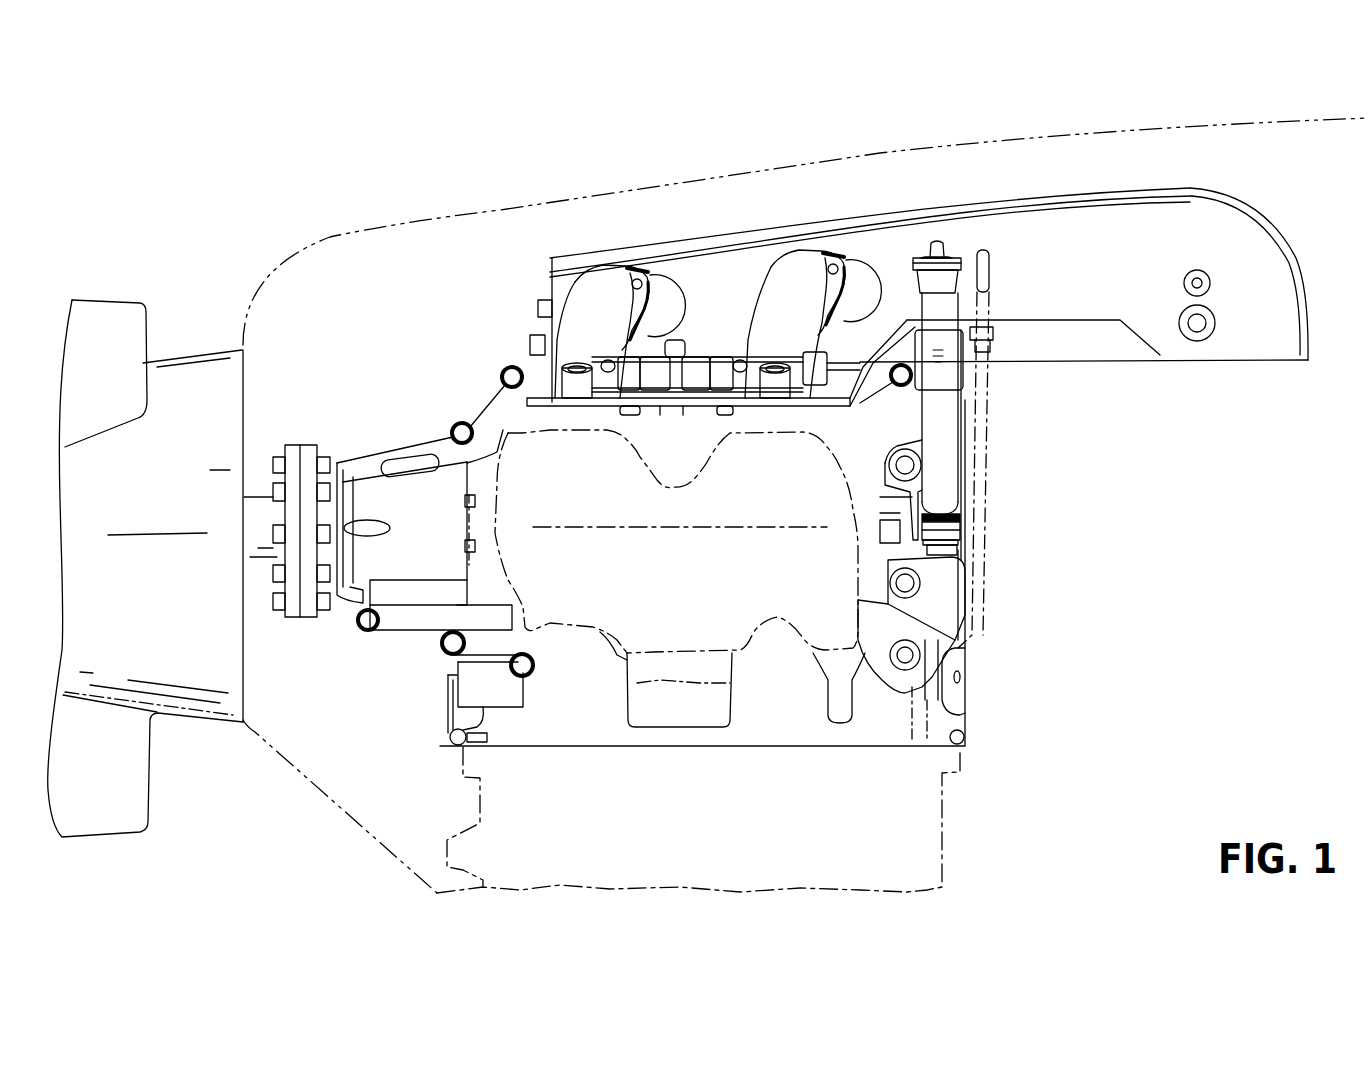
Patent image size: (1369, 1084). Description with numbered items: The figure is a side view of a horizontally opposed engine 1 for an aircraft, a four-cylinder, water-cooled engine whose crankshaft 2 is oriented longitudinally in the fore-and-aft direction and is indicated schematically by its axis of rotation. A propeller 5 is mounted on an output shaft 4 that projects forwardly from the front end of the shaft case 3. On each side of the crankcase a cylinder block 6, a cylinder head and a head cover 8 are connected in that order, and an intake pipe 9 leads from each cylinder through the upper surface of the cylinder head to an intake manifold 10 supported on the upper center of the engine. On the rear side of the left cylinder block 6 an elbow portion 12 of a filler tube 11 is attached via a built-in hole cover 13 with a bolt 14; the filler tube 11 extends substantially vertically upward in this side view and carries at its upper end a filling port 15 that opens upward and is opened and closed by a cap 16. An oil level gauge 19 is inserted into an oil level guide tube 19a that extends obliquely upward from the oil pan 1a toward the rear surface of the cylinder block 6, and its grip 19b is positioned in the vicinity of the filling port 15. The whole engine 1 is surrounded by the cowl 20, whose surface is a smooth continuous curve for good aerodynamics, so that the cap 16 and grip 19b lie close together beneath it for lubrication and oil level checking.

The horizontally opposed engine 1 is at (988, 670).
The oil pan 1a is at (910, 832).
The crankshaft 2 is at (763, 530).
The shaft case 3 is at (473, 405).
The output shaft 4 is at (330, 550).
The propeller 5 is at (127, 307).
The cylinder block 6 is at (517, 367).
The head cover 8 is at (748, 643).
The intake pipe 9 is at (573, 310).
The intake manifold 10 is at (875, 217).
The filler tube 11 is at (947, 410).
The elbow portion 12 is at (963, 527).
The built-in hole cover 13 is at (925, 502).
The bolt 14 is at (970, 573).
The filling port 15 is at (960, 282).
The cap 16 is at (960, 253).
The oil level gauge 19 is at (1083, 317).
The oil level guide tube 19a is at (983, 452).
The grip 19b is at (980, 265).
The cowl 20 is at (597, 183).